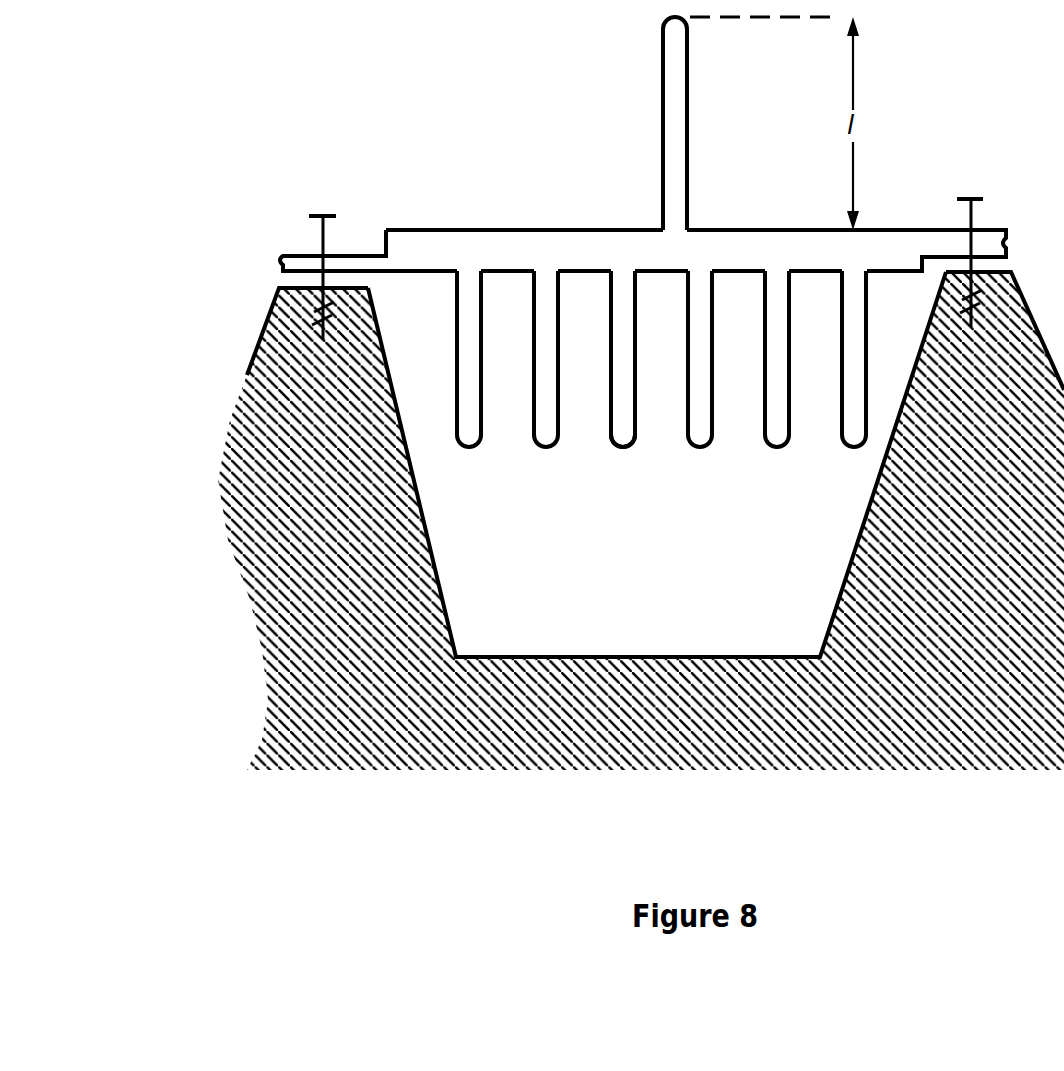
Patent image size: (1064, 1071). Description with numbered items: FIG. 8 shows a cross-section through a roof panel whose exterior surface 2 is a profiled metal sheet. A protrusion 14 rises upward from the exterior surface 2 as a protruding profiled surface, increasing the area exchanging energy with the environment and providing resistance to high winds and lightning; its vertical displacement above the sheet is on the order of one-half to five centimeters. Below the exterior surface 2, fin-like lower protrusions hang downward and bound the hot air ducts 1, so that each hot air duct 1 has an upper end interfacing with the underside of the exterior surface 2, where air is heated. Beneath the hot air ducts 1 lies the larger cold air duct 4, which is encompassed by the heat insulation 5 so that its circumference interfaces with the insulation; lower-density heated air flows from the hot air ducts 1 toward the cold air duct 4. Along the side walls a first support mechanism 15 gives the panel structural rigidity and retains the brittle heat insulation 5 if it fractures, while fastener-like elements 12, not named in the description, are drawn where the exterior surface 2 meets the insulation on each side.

The hot air duct 1 is at (498, 420).
The exterior surface 2 is at (553, 229).
The cold air duct 4 is at (686, 590).
The heat insulation 5 is at (313, 618).
The screw 12 is at (318, 237).
The protrusion 14 is at (670, 96).
The first support mechanism 15 is at (625, 447).